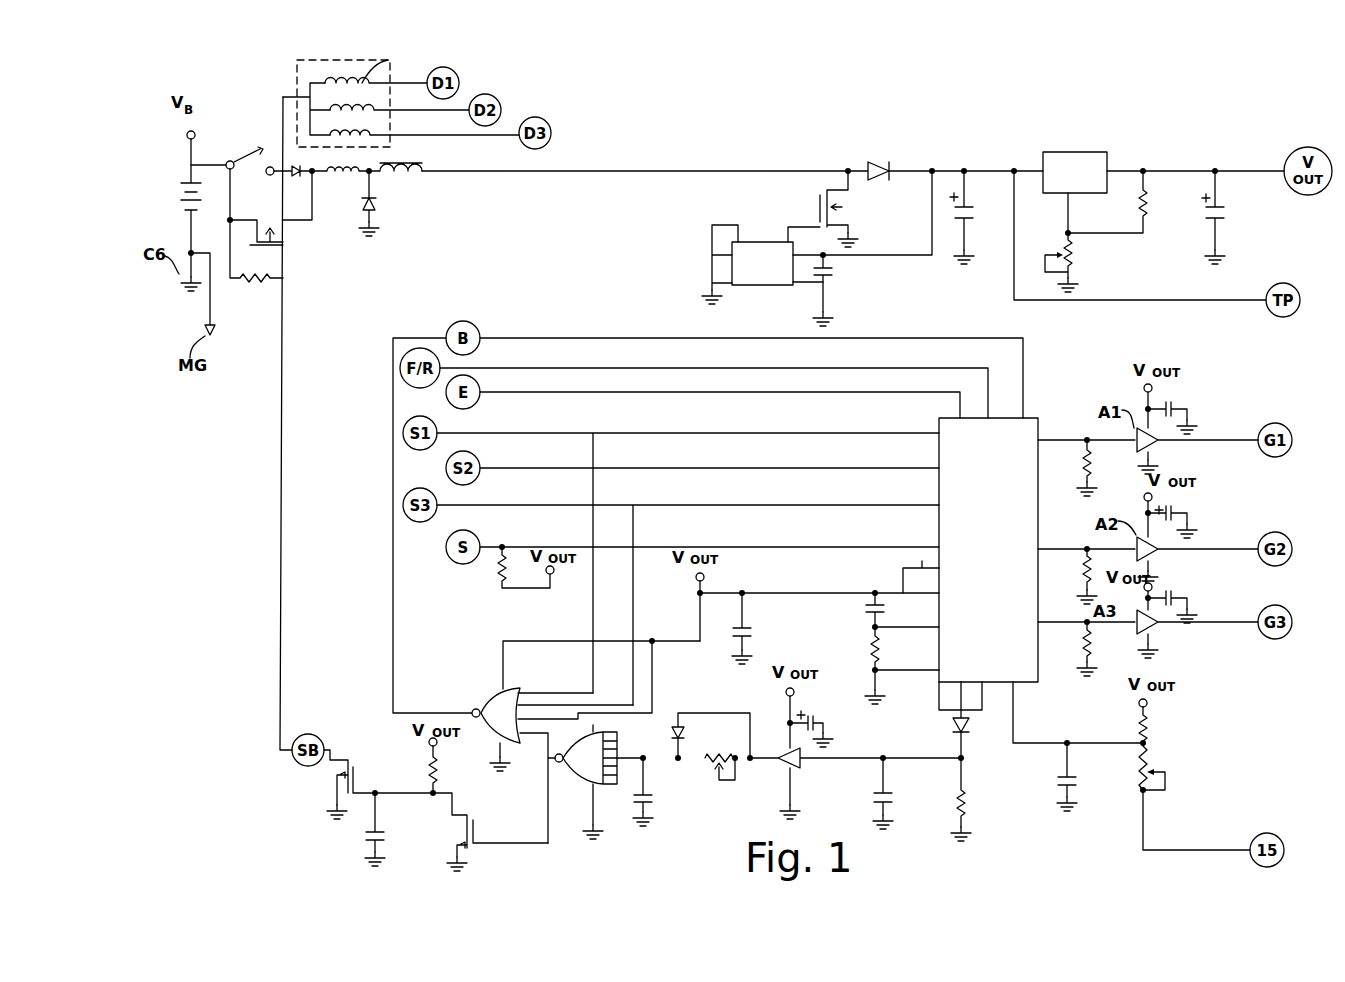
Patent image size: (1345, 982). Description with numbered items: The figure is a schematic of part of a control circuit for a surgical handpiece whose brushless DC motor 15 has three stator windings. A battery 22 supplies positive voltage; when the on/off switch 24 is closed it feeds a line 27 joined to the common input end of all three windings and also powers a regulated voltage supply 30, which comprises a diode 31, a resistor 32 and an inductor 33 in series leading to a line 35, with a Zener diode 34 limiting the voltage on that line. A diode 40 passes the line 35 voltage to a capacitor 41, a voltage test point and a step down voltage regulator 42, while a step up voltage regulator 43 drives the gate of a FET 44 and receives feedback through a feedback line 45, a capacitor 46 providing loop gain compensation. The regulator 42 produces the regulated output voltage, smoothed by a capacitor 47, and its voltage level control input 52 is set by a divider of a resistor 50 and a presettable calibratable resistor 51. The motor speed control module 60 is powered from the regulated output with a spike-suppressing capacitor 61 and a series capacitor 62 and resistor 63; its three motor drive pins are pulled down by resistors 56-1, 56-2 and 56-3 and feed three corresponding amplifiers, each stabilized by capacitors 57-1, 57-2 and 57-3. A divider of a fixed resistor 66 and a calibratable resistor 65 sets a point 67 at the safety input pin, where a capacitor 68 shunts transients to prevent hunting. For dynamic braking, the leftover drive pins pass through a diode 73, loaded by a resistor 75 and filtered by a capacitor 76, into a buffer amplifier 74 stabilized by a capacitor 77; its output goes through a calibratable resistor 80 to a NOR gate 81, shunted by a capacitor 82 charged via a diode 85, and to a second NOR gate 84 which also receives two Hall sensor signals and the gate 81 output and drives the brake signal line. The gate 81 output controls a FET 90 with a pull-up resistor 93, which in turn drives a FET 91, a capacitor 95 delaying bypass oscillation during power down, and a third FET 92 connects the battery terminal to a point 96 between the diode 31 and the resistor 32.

The motor 15 is at (290, 61).
The battery 22 is at (182, 184).
The on/off switch 24 is at (256, 148).
The line 27 is at (282, 99).
The regulated voltage supply circuit 30 is at (350, 242).
The diode 31 is at (289, 176).
The resistor 32 is at (339, 174).
The inductor 33 is at (415, 176).
The Zener diode 34 is at (375, 211).
The line 35 is at (608, 171).
The diode 40 is at (872, 161).
The capacitor 41 is at (976, 216).
The step down voltage regulator 42 is at (1065, 152).
The step up voltage regulator 43 is at (772, 286).
The field effect transistor 44 is at (812, 198).
The feedback line 45 is at (875, 256).
The capacitor 46 is at (832, 283).
The capacitor 47 is at (1222, 207).
The resistor 50 is at (1150, 196).
The calibratable resistor 51 is at (1080, 258).
The voltage level control input 52 is at (1072, 221).
The resistor 56-1 is at (1084, 458).
The resistor 56-2 is at (1082, 563).
The resistor 56-3 is at (1086, 646).
The capacitor 57-1 is at (1179, 407).
The capacitor 57-2 is at (1181, 521).
The capacitor 57-3 is at (1179, 592).
The motor speed control module 60 is at (980, 554).
The capacitor 61 is at (752, 627).
The capacitor 62 is at (860, 624).
The resistor 63 is at (860, 656).
The calibratable resistor 65 is at (1158, 792).
The fixed resistor 66 is at (1151, 723).
The point 67 is at (1158, 745).
The capacitor 68 is at (1062, 770).
The diode 73 is at (969, 726).
The buffer amplifier 74 is at (802, 760).
The resistor 75 is at (968, 802).
The capacitor 76 is at (887, 795).
The capacitor 77 is at (816, 723).
The calibratable resistor 80 is at (726, 780).
The NOR gate 81 is at (586, 768).
The capacitor 82 is at (648, 808).
The second NOR gate 84 is at (496, 698).
The diode 85 is at (687, 736).
The FET 90 is at (490, 856).
The FET 91 is at (316, 813).
The FET 92 is at (297, 237).
The pull-up resistor 93 is at (437, 758).
The capacitor 95 is at (377, 830).
The point 96 is at (315, 176).